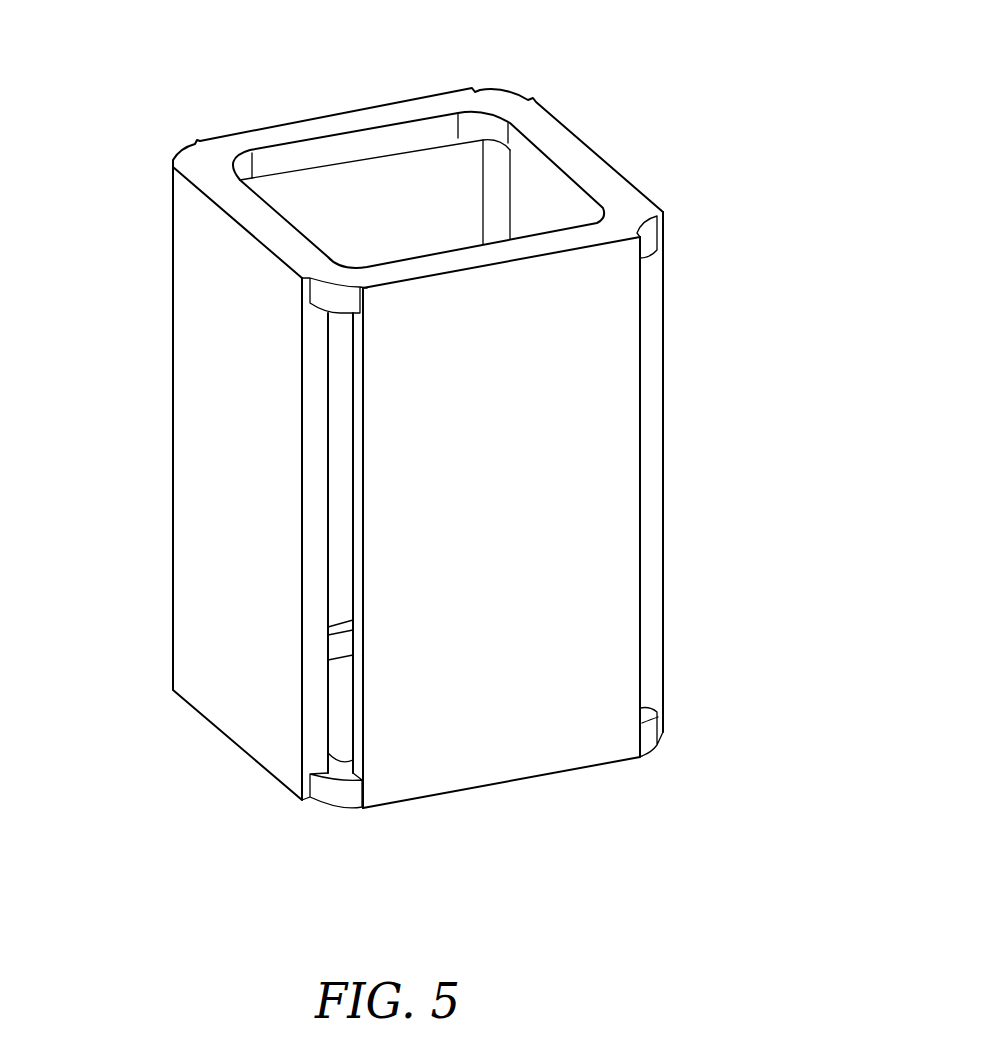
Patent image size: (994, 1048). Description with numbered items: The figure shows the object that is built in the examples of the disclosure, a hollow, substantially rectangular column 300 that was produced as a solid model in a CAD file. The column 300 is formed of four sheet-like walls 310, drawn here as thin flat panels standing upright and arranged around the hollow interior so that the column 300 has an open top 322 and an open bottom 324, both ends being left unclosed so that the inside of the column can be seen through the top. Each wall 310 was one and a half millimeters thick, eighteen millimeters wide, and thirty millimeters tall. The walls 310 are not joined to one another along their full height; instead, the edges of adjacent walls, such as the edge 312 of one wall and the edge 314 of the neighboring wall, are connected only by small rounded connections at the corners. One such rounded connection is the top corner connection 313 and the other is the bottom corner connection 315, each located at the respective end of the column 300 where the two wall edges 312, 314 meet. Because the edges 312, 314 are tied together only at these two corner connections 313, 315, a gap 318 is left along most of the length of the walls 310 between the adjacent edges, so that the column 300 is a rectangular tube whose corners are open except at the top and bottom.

The column 300 is at (656, 97).
The sheet-like walls 310 is at (297, 198).
The wall edge 312 is at (318, 405).
The top corner connection 313 is at (338, 298).
The wall edge 314 is at (360, 490).
The bottom corner connection 315 is at (328, 788).
The gap 318 is at (338, 587).
The open top 322 is at (452, 105).
The open bottom 324 is at (651, 752).